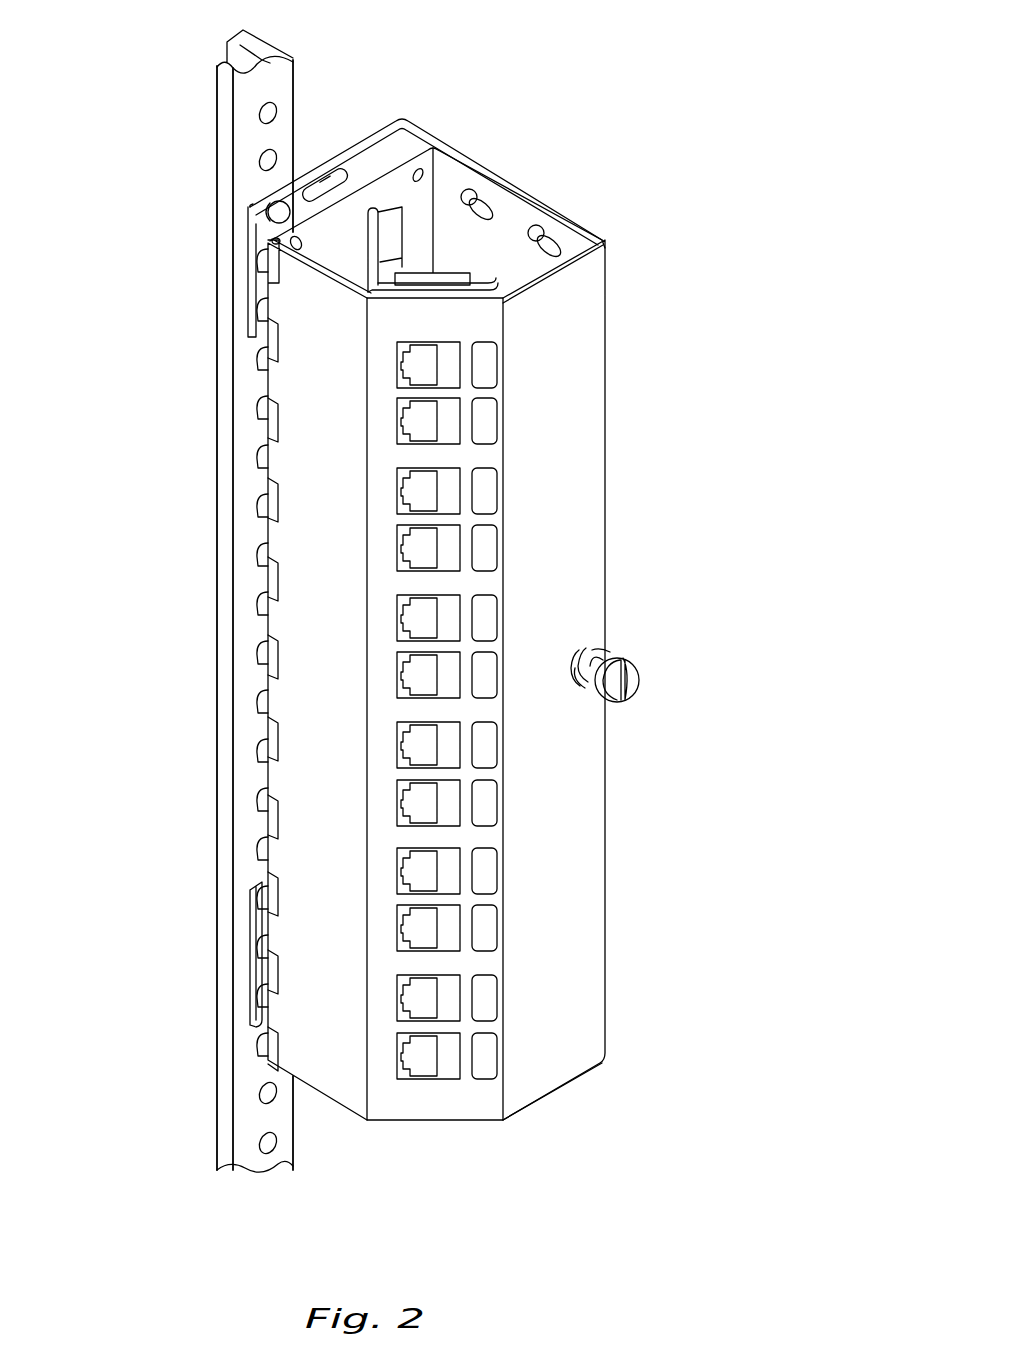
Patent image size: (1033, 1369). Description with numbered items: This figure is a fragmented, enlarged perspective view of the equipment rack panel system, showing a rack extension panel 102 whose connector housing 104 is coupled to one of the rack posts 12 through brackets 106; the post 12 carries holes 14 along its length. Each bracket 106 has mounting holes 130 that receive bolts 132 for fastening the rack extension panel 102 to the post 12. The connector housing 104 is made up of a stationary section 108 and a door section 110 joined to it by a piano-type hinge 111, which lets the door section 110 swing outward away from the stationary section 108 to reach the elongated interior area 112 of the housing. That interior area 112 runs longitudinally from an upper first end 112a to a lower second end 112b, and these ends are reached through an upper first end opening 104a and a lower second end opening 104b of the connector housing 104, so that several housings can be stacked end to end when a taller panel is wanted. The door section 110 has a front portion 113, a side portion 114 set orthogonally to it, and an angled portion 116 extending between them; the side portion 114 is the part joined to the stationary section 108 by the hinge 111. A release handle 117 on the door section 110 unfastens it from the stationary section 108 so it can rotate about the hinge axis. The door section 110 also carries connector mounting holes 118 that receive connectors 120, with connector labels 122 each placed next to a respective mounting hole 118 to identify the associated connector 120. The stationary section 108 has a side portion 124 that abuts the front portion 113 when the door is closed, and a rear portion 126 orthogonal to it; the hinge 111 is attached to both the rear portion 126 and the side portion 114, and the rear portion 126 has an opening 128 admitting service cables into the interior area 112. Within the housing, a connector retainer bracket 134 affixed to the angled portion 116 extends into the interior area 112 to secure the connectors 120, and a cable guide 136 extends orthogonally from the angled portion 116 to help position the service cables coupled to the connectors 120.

The post 12 is at (220, 112).
The rail mounting holes 14 is at (278, 110).
The rack extension panel 102 is at (590, 68).
The connector housing 104 is at (595, 142).
The upper first end opening 104a is at (503, 240).
The lower second end opening 104b is at (524, 1140).
The bracket 106 is at (360, 137).
The stationary section 108 is at (625, 205).
The door section 110 is at (668, 574).
The piano-type hinge 111 is at (268, 680).
The elongated interior area 112 is at (457, 220).
The upper first end 112a is at (497, 130).
The lower second end 112b is at (582, 1140).
The front portion 113 is at (583, 400).
The side portion 114 is at (318, 624).
The angled portion 116 is at (475, 322).
The release handle 117 is at (643, 678).
The connector mounting holes 118 is at (460, 787).
The connectors 120 is at (423, 808).
The connector labels 122 is at (483, 490).
The side portion 124 is at (548, 200).
The rear portion 126 is at (387, 160).
The opening 128 is at (390, 227).
The mounting holes 130 is at (343, 177).
The bolts 132 is at (262, 213).
The connector retainer bracket 134 is at (480, 285).
The cable guide 136 is at (357, 258).